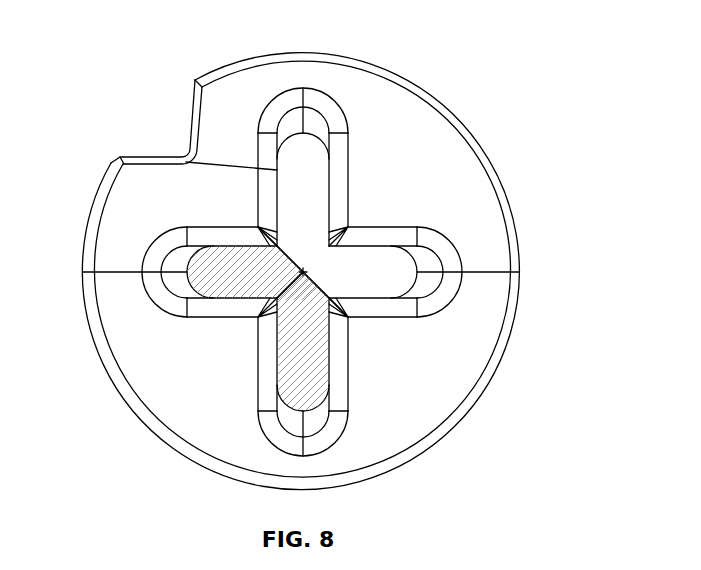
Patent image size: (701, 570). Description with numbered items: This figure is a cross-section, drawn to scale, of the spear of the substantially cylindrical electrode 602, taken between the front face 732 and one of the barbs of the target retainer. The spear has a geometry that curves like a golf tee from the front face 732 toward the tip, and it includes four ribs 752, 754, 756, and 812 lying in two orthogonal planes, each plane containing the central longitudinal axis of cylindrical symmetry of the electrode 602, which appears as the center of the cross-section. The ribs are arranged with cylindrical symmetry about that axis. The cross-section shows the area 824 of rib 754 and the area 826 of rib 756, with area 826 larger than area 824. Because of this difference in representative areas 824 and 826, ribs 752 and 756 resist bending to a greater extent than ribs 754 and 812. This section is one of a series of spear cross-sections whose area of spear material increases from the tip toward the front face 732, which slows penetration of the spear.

The electrode 602 is at (168, 62).
The front face 732 is at (396, 173).
The rib 752 is at (172, 157).
The rib 754 is at (237, 230).
The rib 812 is at (385, 246).
The rib 756 is at (257, 377).
The area of rib 754 824 is at (249, 274).
The area of rib 756 826 is at (298, 359).